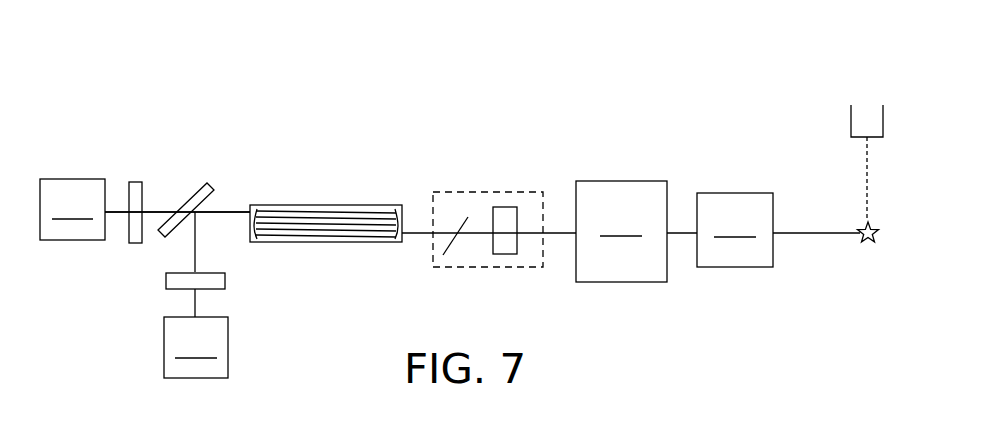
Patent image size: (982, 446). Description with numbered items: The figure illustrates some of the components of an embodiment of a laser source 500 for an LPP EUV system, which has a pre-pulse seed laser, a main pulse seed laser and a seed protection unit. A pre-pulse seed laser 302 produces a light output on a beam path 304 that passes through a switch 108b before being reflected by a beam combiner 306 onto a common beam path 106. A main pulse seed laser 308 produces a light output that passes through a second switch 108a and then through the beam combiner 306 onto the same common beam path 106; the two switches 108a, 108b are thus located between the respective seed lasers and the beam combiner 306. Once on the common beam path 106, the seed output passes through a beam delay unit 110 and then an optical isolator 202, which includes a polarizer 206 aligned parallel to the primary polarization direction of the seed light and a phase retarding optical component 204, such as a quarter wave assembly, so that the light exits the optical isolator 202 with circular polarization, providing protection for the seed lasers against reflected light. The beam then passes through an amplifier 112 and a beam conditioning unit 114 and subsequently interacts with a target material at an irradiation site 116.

The laser source 500 is at (666, 140).
The common beam path 106 is at (236, 211).
The main pulse seed laser 308 is at (72, 209).
The switch 108a is at (136, 180).
The beam combiner 306 is at (192, 197).
The beam delay unit 110 is at (325, 204).
The optical isolator 202 is at (485, 268).
The polarizer 206 is at (465, 221).
The phase retarding optical component 204 is at (505, 206).
The amplifier 112 is at (621, 231).
The beam conditioning unit 114 is at (735, 230).
The irradiation site 116 is at (862, 243).
The switch 108b is at (225, 280).
The beam path 304 is at (192, 298).
The pre-pulse seed laser 302 is at (196, 347).